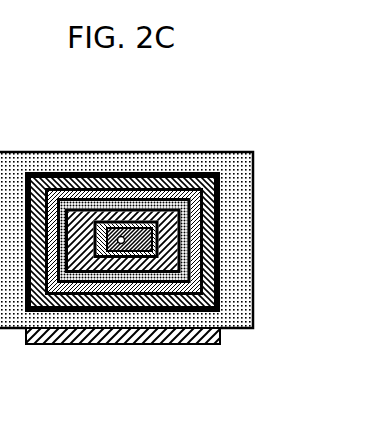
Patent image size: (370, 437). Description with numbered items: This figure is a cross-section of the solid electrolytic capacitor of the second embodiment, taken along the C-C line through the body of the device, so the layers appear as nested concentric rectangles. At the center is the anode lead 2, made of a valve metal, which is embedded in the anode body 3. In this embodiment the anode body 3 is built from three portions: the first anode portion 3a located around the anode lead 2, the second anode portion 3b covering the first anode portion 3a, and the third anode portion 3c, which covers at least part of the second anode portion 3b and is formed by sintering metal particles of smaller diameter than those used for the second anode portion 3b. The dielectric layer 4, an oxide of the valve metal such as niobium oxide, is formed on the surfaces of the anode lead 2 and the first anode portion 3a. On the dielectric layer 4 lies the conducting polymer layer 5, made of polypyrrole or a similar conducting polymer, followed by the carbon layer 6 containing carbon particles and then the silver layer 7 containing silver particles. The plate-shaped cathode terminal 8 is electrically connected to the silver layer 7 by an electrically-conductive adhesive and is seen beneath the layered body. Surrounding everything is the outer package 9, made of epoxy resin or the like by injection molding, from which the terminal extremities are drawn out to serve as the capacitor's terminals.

The anode lead 2 is at (179, 251).
The anode body 3 is at (182, 248).
The first anode portion 3a is at (209, 303).
The second anode portion 3b is at (196, 273).
The third anode portion 3c is at (186, 244).
The dielectric layer 4 is at (222, 196).
The conducting polymer layer 5 is at (191, 178).
The carbon layer 6 is at (166, 186).
The silver layer 7 is at (113, 175).
The cathode terminal 8 is at (174, 345).
The outer package 9 is at (72, 163).